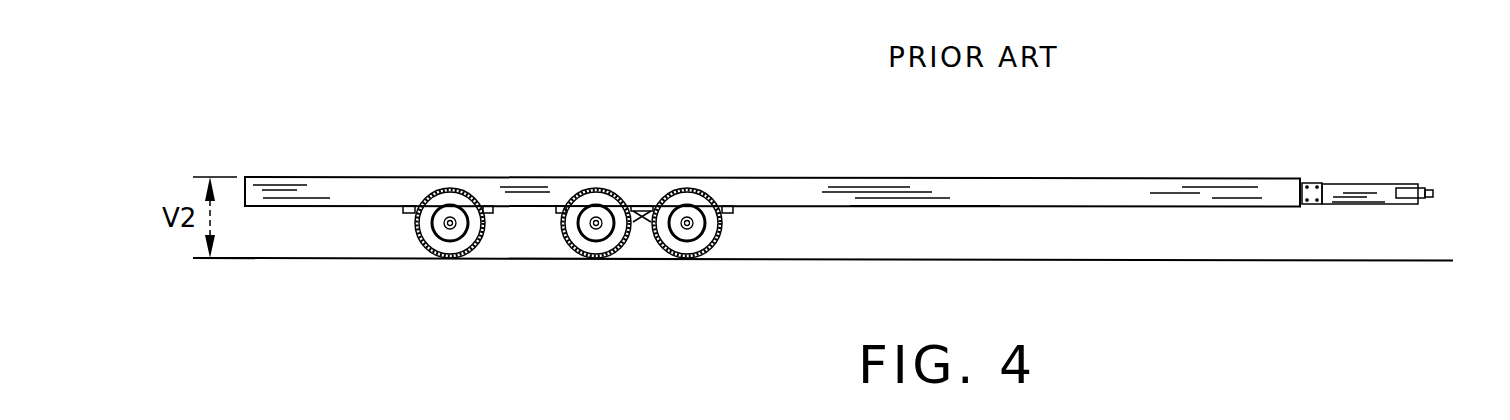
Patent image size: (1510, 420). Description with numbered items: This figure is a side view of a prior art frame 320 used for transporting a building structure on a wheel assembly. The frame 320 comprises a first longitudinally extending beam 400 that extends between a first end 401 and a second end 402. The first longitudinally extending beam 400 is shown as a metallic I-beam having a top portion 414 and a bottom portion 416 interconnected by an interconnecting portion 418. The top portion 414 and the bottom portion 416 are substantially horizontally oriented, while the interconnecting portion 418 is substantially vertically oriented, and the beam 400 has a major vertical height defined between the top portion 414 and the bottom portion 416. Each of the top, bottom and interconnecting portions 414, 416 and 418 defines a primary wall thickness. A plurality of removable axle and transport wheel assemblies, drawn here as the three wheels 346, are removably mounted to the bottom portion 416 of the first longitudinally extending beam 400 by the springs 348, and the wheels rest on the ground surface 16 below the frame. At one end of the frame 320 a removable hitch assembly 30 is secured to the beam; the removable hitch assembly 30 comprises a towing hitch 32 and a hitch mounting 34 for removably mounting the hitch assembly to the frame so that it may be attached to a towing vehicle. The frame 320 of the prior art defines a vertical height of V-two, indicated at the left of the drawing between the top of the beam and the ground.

The ground surface 16 is at (1183, 261).
The removable hitch assembly 30 is at (1356, 183).
The towing hitch 32 is at (1428, 188).
The hitch mounting 34 is at (1310, 207).
The frame 320 is at (1182, 172).
The wheel 346 is at (450, 260).
The springs 348 is at (728, 214).
The first longitudinally extending beam 400 is at (1090, 170).
The first end 401 is at (1250, 198).
The second end 402 is at (268, 177).
The top portion 414 is at (822, 178).
The bottom portion 416 is at (960, 207).
The interconnecting portion 418 is at (863, 195).